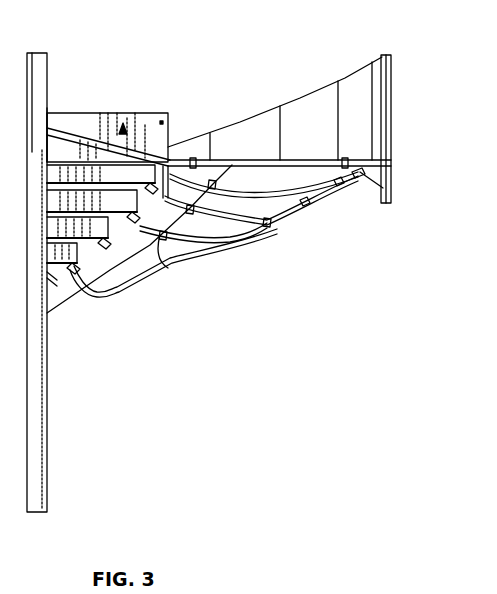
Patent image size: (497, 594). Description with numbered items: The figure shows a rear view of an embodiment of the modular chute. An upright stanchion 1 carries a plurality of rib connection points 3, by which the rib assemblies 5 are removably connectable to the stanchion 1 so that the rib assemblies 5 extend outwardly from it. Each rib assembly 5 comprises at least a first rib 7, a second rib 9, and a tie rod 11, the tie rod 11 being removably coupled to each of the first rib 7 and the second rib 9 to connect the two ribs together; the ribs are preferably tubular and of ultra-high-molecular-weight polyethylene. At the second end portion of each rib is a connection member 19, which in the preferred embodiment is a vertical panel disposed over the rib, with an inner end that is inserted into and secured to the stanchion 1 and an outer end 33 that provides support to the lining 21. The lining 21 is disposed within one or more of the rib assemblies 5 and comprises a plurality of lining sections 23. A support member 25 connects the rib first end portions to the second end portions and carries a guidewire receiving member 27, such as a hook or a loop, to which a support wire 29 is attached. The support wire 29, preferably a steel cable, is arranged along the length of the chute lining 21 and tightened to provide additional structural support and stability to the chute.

The stanchion 1 is at (47, 387).
The rib connection points 3 is at (47, 108).
The rib assemblies 5 is at (126, 113).
The connection member 19 is at (96, 113).
The outer ends 33 is at (157, 113).
The lining sections 23 is at (347, 92).
The tie rod 11 is at (366, 68).
The lining 21 is at (358, 98).
The first rib 7 is at (362, 180).
The support member 25 is at (300, 216).
The second rib 9 is at (325, 205).
The guidewire receiving member 27 is at (124, 257).
The support wire 29 is at (110, 272).